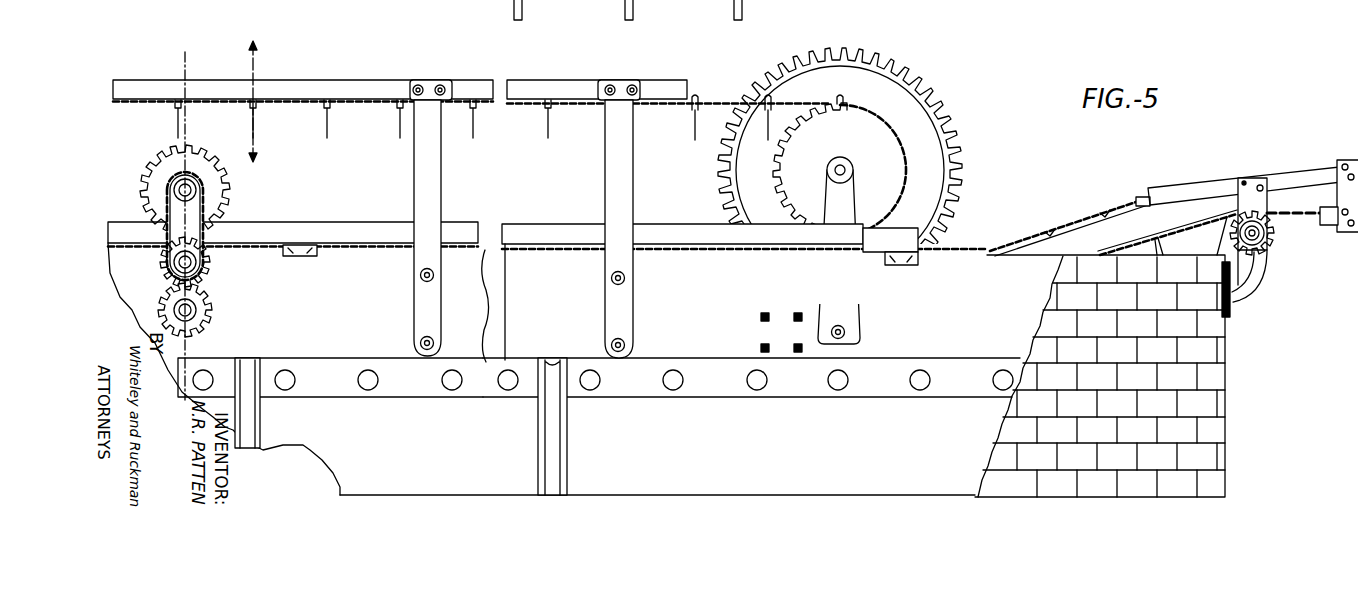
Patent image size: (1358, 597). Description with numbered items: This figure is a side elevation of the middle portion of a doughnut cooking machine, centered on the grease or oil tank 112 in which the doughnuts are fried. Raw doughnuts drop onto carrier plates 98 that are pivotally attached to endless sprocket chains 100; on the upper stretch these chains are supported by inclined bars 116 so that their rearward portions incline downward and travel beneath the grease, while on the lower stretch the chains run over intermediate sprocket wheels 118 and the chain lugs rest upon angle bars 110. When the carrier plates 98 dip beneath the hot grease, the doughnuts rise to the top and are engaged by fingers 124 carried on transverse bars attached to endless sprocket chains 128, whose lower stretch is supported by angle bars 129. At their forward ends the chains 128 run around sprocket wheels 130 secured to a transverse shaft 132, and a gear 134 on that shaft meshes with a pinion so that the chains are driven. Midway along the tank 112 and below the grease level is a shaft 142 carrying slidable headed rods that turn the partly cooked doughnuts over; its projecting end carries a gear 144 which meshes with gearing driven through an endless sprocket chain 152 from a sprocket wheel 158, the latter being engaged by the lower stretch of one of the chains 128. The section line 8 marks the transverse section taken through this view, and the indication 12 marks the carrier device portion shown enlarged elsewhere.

The section line 8- 8 is at (185, 52).
The enlarged detail view indication 12 is at (256, 103).
The carrier plates 98 is at (1140, 205).
The endless sprocket chains 100 is at (1302, 218).
The angle bars 110 is at (1326, 207).
The grease or oil tank 112 is at (968, 352).
The inclined bars 116 is at (1183, 190).
The intermediate sprocket wheels 118 is at (1278, 248).
The fingers 124 is at (526, 153).
The endless sprocket chains 128 is at (358, 98).
The angle bars 129 is at (305, 86).
The sprocket wheels 130 is at (853, 126).
The transverse shaft 132 is at (852, 164).
The gear 134 is at (848, 58).
The shaft 142 is at (190, 314).
The gear 144 is at (206, 306).
The endless sprocket chain 152 is at (210, 222).
The sprocket wheel 158 is at (150, 178).